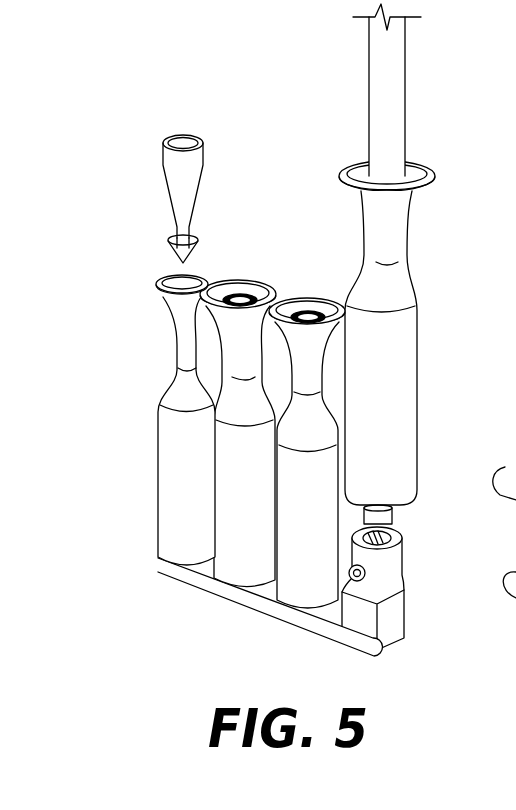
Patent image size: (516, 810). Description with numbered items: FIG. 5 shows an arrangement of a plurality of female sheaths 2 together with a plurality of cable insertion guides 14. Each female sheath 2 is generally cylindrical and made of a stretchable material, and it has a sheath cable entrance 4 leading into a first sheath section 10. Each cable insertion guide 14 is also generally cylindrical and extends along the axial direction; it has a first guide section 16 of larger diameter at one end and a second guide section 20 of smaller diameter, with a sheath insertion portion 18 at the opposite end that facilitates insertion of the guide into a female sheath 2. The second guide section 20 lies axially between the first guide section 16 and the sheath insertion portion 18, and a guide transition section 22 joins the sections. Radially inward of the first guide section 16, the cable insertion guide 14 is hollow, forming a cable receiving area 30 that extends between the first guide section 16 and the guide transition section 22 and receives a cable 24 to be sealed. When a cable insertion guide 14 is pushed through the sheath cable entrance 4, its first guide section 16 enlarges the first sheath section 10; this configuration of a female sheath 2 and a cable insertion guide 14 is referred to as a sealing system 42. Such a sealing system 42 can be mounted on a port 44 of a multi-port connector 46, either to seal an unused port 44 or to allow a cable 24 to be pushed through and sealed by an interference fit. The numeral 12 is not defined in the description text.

The female sheath 2 is at (300, 399).
The sheath cable entrance 4 is at (157, 289).
The first sheath section 10 is at (300, 399).
The vial 12 is at (300, 399).
The cable insertion guide 14 is at (179, 190).
The first guide section 16 is at (156, 203).
The sheath insertion portion 18 is at (198, 248).
The second guide section 20 is at (171, 236).
The guide transition section 22 is at (170, 196).
The cable 24 is at (406, 108).
The cable receiving area 30 is at (182, 141).
The sealing system 42 is at (387, 429).
The port 44 is at (404, 580).
The multi-port connector 46 is at (305, 634).